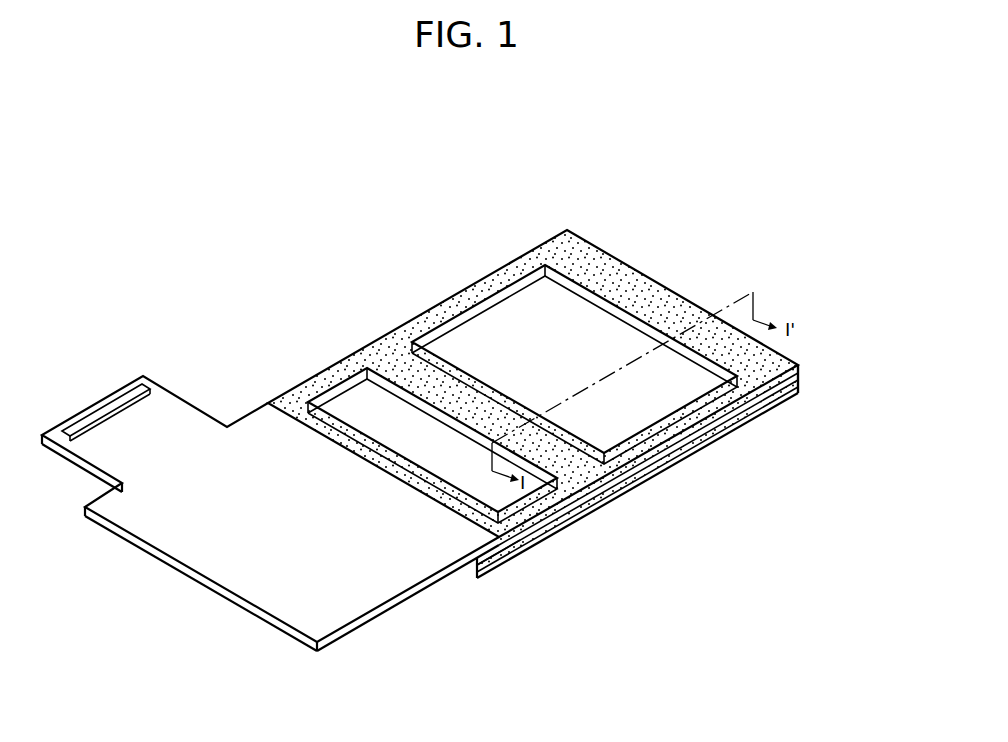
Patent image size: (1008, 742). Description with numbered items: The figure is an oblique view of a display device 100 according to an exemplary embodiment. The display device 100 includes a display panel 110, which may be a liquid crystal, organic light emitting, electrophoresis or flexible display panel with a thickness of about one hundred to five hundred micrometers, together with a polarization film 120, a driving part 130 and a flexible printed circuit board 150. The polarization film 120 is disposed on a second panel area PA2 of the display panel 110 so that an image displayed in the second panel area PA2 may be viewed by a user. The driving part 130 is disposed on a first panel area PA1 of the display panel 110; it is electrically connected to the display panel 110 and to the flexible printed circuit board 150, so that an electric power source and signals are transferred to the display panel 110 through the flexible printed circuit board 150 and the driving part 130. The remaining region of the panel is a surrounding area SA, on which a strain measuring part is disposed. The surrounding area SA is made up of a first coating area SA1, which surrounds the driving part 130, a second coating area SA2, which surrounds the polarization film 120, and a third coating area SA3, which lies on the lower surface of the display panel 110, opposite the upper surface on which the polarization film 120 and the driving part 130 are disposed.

The display device 100 is at (282, 229).
The display panel 110 is at (800, 376).
The polarization film 120 is at (470, 323).
The driving part 130 is at (343, 395).
The flexible printed circuit board 150 is at (372, 588).
The surrounding area SA is at (799, 468).
The first coating area SA1 is at (585, 468).
The second coating area SA2 is at (516, 264).
The third coating area SA3 is at (657, 476).
The first panel area PA1 is at (538, 527).
The second panel area PA2 is at (686, 444).